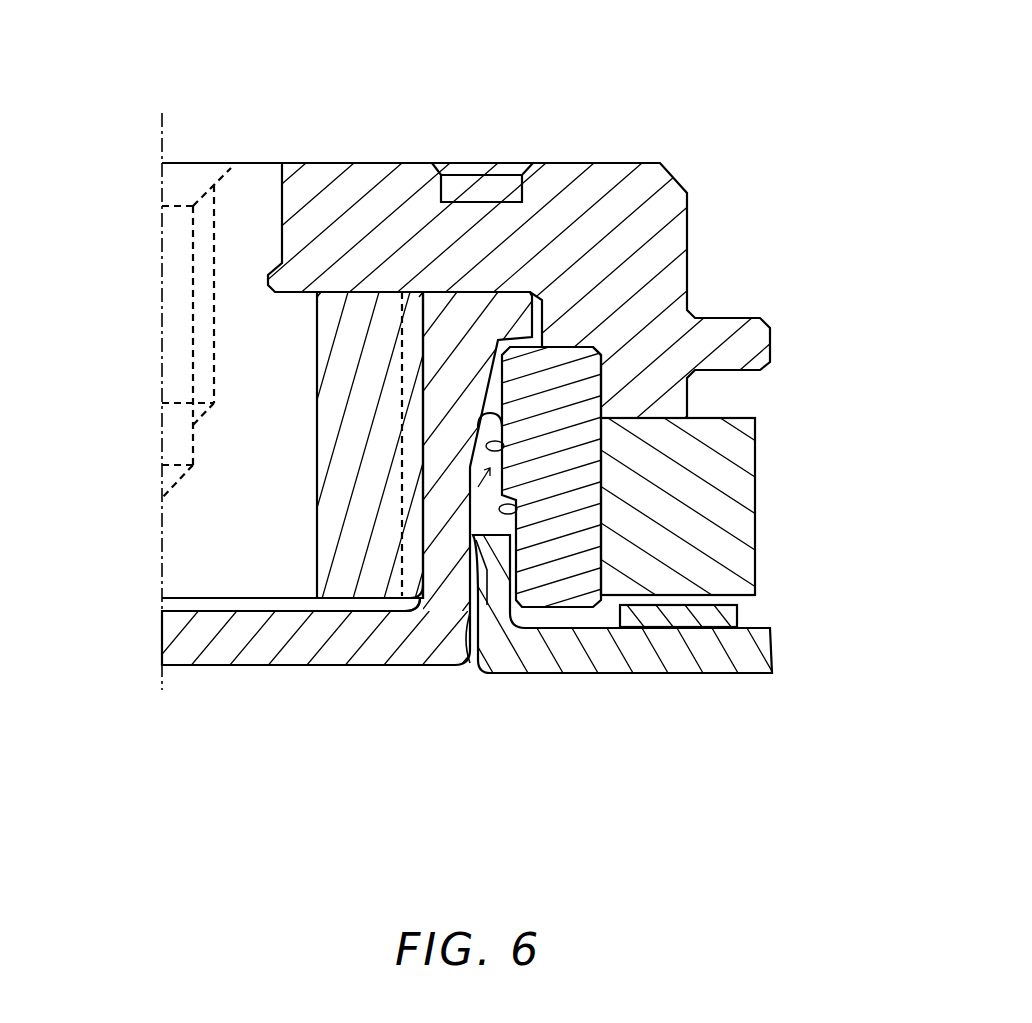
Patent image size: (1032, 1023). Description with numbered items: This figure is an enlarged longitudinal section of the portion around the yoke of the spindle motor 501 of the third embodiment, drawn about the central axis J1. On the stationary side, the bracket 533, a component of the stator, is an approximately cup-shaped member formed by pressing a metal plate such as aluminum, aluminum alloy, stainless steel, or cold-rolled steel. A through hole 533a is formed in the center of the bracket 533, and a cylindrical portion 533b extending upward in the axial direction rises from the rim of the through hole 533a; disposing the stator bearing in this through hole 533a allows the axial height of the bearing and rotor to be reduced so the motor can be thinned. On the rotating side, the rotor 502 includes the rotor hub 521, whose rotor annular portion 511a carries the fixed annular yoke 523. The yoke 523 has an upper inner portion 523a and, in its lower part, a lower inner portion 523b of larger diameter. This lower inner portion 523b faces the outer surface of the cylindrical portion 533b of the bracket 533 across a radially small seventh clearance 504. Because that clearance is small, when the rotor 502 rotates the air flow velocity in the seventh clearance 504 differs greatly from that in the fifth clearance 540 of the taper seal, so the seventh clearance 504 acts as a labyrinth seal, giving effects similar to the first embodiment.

The spindle motor 501 is at (262, 48).
The rotor 502 is at (485, 92).
The rotation axis J1 is at (160, 126).
The rotor hub 521 is at (400, 188).
The rotor annular portion 511a is at (607, 330).
The annular yoke 523 is at (555, 395).
The upper inner portion 523a is at (490, 440).
The lower inner portion 523b is at (500, 508).
The seventh clearance 504 is at (515, 563).
The fifth clearance 540 is at (410, 600).
The bracket 533 is at (667, 653).
The through hole 533a is at (465, 625).
The cylindrical portion 533b is at (487, 568).